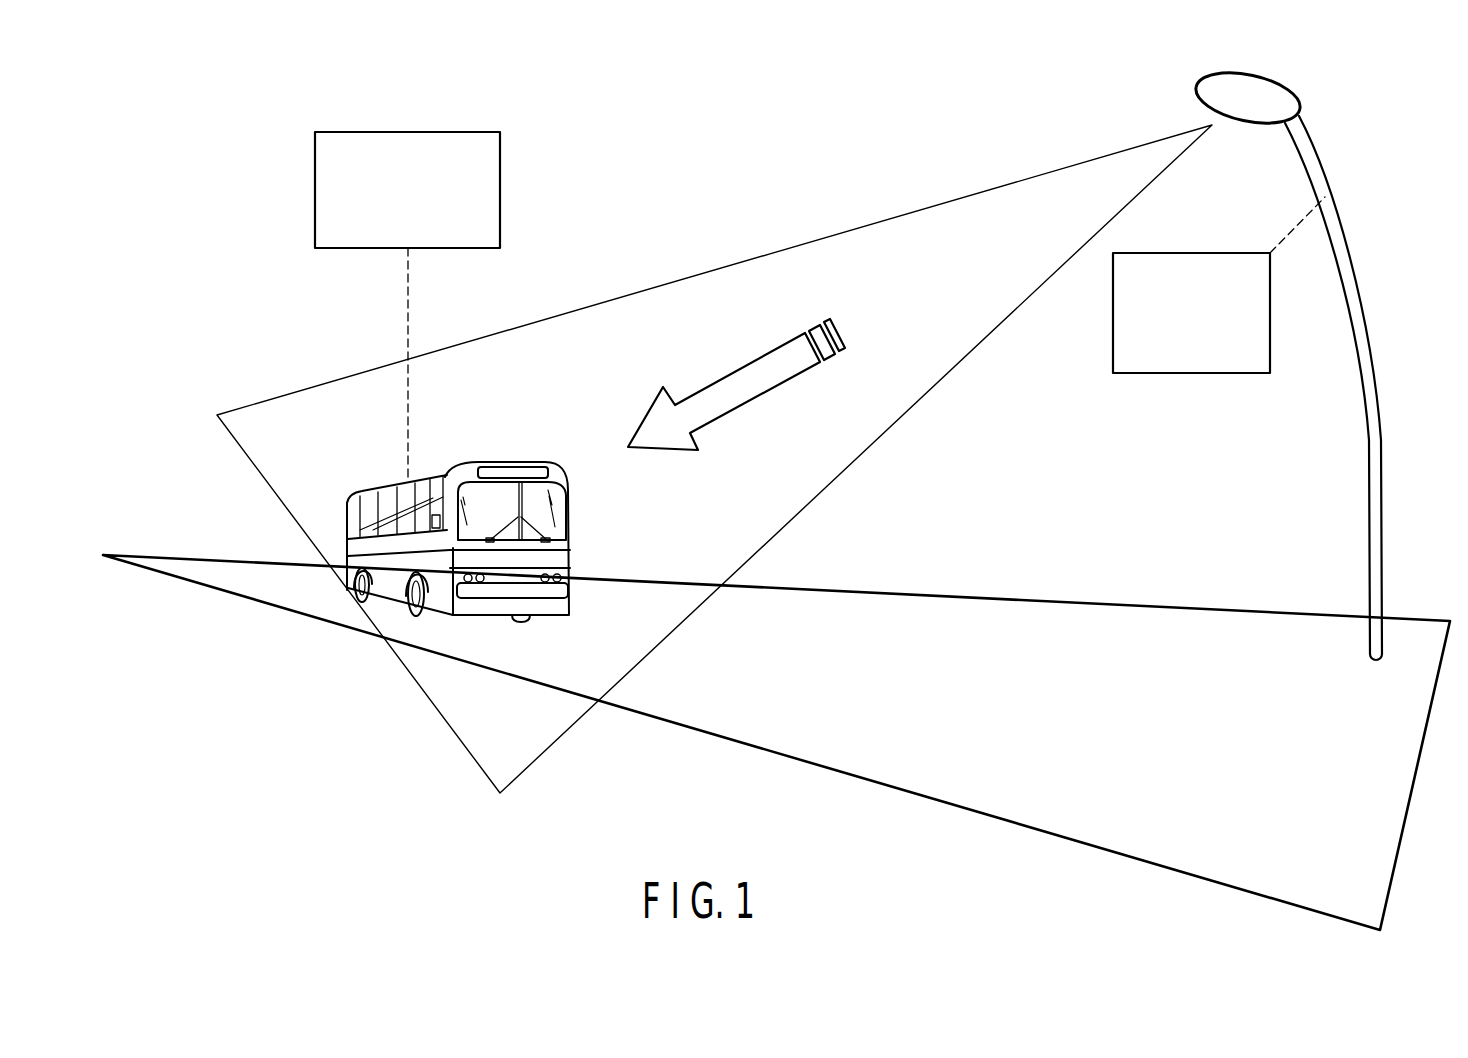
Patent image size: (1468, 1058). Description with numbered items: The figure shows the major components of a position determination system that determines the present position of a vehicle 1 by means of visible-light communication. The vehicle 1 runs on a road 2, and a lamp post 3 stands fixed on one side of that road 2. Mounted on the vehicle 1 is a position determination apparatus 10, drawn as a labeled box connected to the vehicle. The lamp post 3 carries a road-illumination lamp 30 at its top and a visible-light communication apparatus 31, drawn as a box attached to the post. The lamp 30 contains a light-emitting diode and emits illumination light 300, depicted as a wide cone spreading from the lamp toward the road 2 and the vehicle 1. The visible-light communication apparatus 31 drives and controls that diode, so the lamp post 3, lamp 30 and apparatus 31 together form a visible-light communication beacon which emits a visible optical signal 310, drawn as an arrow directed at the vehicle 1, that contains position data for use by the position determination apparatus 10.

The vehicle 1 is at (572, 593).
The road 2 is at (813, 768).
The lamp post 3 is at (1363, 300).
The position determination apparatus 10 is at (500, 192).
The road-illumination lamp 30 is at (1198, 92).
The visible-light communication apparatus 31 is at (1270, 363).
The illumination light 300 is at (807, 238).
The visible optical signal 310 is at (752, 400).